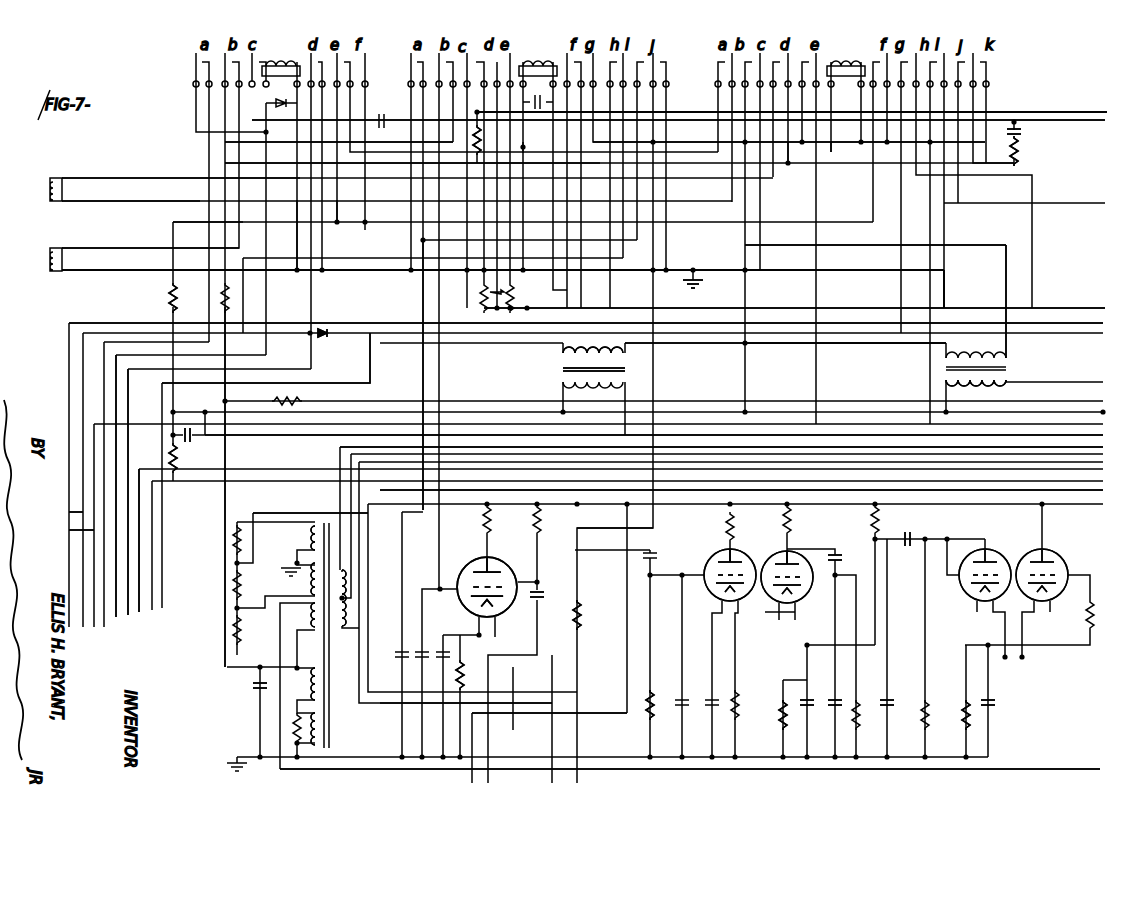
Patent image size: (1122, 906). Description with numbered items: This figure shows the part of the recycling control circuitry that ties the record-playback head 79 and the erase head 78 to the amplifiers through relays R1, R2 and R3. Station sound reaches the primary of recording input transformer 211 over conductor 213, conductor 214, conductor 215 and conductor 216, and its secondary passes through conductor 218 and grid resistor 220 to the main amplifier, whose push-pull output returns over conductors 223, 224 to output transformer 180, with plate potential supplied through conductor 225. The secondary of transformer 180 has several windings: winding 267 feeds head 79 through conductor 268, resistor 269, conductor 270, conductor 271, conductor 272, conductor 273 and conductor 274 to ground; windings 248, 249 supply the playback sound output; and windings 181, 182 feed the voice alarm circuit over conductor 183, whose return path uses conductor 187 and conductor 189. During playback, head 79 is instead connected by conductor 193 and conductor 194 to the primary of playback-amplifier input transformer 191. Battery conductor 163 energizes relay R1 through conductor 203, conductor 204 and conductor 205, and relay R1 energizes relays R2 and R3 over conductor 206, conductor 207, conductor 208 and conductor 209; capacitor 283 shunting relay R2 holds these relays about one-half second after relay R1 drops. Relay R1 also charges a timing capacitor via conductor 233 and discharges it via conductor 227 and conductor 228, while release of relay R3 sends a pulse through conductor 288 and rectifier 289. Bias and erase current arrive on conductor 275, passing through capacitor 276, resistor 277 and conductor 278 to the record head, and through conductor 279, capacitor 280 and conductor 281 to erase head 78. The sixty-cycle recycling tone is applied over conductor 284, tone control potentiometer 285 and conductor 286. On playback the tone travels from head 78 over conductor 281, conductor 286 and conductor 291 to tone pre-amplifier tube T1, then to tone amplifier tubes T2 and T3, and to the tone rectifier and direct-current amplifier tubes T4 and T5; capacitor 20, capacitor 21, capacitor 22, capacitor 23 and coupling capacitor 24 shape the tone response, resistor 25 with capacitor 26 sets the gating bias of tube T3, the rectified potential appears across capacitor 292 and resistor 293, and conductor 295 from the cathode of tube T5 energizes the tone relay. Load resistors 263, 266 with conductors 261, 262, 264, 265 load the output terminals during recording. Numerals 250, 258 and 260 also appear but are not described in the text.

The record-playback head 79 is at (52, 178).
The erase head 78 is at (50, 247).
The conductor 272 is at (115, 177).
The conductor 273 is at (80, 203).
The conductor 270 is at (220, 212).
The conductor 281 is at (94, 249).
The resistor 269 is at (220, 296).
The conductor 204 is at (282, 119).
The grid resistor 220 is at (337, 102).
The capacitor 280 is at (383, 112).
The conductor 286 is at (339, 131).
The tone control potentiometer 285 is at (467, 148).
The capacitor 283 is at (535, 106).
The conductor 208 is at (524, 147).
The conductor 207 is at (412, 167).
The conductor 206 is at (372, 185).
The conductor 205 is at (294, 232).
The conductor 233 is at (334, 222).
The battery conductor 163 is at (379, 234).
The conductor 227 is at (322, 274).
The conductor 213 is at (359, 320).
The conductor 279 is at (677, 116).
The conductor 209 is at (789, 131).
The conductor 271 is at (790, 159).
The conductor 278 is at (843, 165).
The conductor 274 is at (740, 256).
The conductor 284 is at (1075, 110).
The capacitor 276 is at (1022, 131).
The resistor 277 is at (1022, 151).
The conductor 275 is at (1095, 126).
The conductor 194 is at (965, 245).
The conductor 193 is at (945, 292).
The conductor 189 is at (1065, 307).
The conductor 214 is at (555, 345).
The conductor 215 is at (648, 346).
The recording input transformer 211 is at (560, 370).
The conductor 218 is at (626, 397).
The conductor 291 is at (444, 373).
The conductor 288 is at (842, 337).
The playback-amplifier input transformer 191 is at (935, 370).
The rectifier 289 is at (330, 337).
The conductor 228 is at (283, 365).
The conductor 225 is at (347, 451).
The conductor 223 is at (405, 452).
The conductor 224 is at (360, 473).
The conductor 264 is at (416, 490).
The conductor 268 is at (224, 503).
The conductor 250 is at (275, 508).
The output transformer 180 is at (325, 508).
The winding 248 is at (311, 540).
The winding 249 is at (295, 579).
The winding 182 is at (295, 614).
The transformer winding 260 is at (364, 644).
The winding 181 is at (310, 741).
The secondary winding 267 is at (269, 695).
The conductor 261 is at (484, 661).
The load resistor 263 is at (545, 620).
The conductor 262 is at (513, 687).
The load resistor 266 is at (580, 610).
The conductor 265 is at (655, 526).
The conductor 216 is at (55, 502).
The conductor 258 is at (61, 525).
The conductor 187 is at (154, 582).
The conductor 295 is at (156, 607).
The conductor 203 is at (131, 610).
The tone pre-amplifier tube T1 is at (472, 556).
The tone amplifier tube T2 is at (708, 560).
The tone amplifier tube T3 is at (768, 550).
The tone rectifier tube T4 is at (968, 547).
The direct current amplifier tube T5 is at (1022, 547).
The capacitor 20 is at (673, 694).
The resistor 25 is at (778, 722).
The capacitor 26 is at (808, 708).
The capacitor 21 is at (834, 687).
The capacitor 22 is at (837, 560).
The capacitor 23 is at (891, 687).
The tone rectifier coupling capacitor 24 is at (882, 527).
The capacitor 292 is at (993, 701).
The resistor 293 is at (977, 718).
The conductor 183 is at (1031, 768).
The relay R1 is at (281, 59).
The relay R2 is at (538, 59).
The relay R3 is at (846, 62).